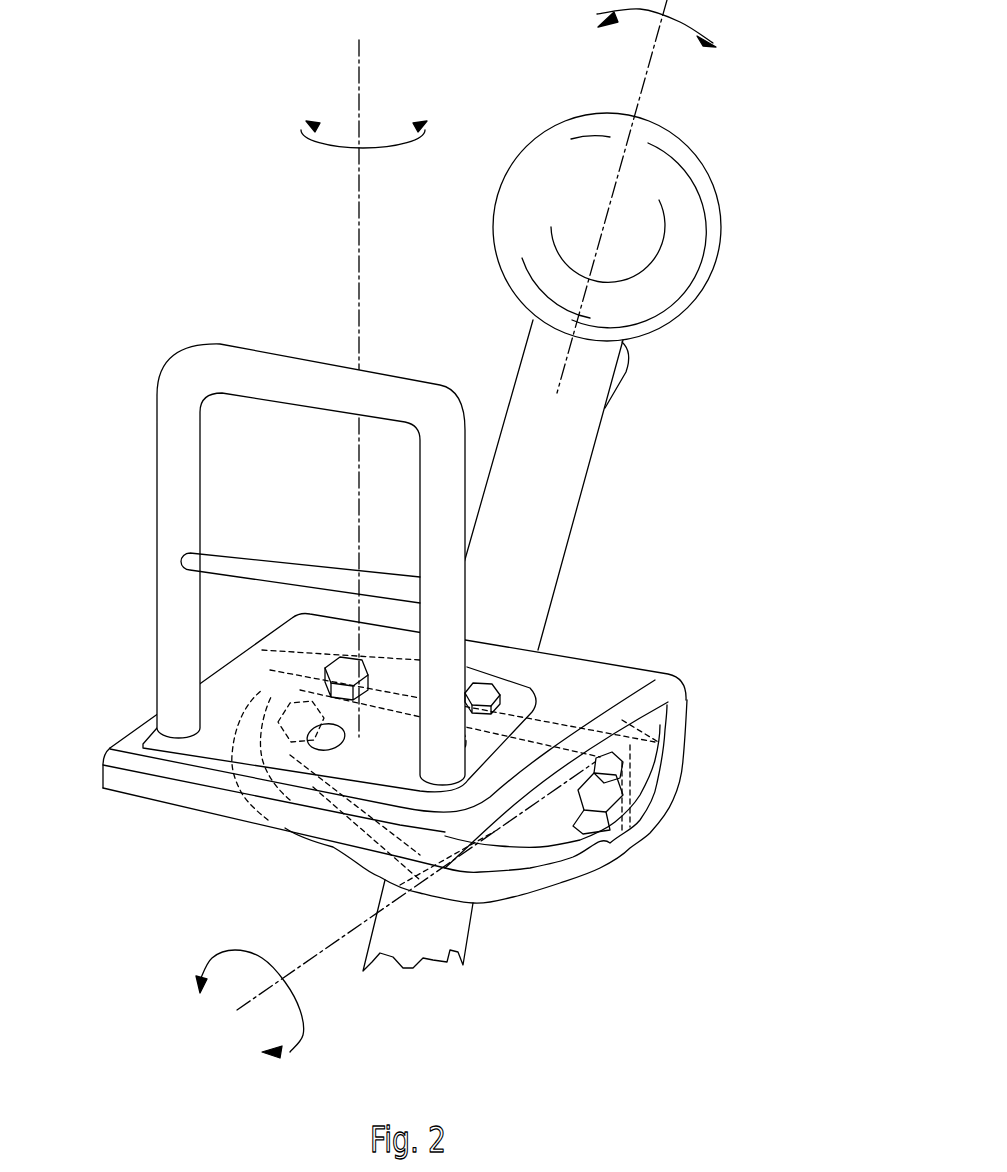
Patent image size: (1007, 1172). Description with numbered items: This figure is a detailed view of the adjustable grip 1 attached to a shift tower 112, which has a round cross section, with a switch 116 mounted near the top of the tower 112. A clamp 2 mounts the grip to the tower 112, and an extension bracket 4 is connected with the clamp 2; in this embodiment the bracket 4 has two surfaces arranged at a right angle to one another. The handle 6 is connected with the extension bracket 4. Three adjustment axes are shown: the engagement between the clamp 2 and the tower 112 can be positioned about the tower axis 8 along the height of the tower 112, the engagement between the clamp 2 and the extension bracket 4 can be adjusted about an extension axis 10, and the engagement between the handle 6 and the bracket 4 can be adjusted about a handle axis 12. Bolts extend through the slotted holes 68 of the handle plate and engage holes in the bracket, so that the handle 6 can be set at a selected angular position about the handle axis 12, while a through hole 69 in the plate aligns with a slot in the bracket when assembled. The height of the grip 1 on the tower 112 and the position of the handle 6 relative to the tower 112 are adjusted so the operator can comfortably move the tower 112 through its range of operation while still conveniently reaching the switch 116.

The adjustable grip 1 is at (131, 172).
The clamp 2 is at (521, 811).
The extension bracket 4 is at (580, 675).
The handle 6 is at (190, 447).
The tower axis 8 is at (645, 73).
The extension axis 10 is at (327, 947).
The handle axis 12 is at (360, 225).
The holes 68 is at (324, 680).
The through hole 69 is at (338, 746).
The tower 112 is at (587, 463).
The switch 116 is at (623, 362).